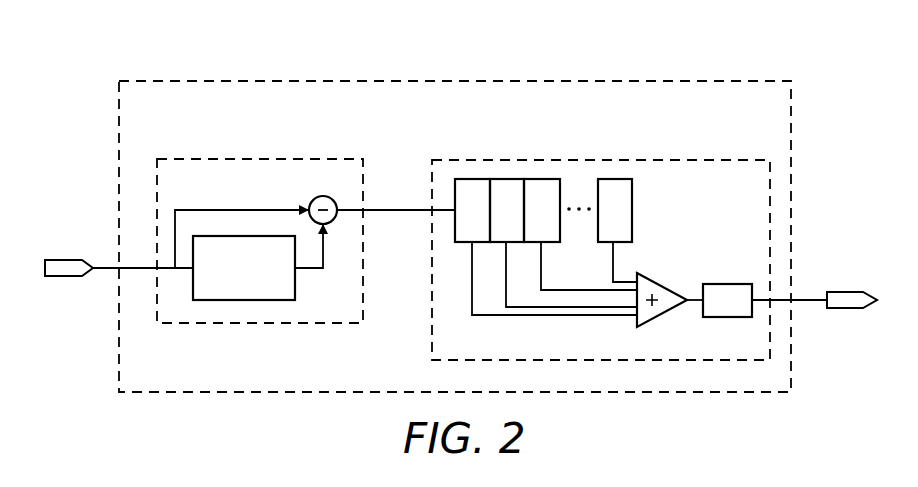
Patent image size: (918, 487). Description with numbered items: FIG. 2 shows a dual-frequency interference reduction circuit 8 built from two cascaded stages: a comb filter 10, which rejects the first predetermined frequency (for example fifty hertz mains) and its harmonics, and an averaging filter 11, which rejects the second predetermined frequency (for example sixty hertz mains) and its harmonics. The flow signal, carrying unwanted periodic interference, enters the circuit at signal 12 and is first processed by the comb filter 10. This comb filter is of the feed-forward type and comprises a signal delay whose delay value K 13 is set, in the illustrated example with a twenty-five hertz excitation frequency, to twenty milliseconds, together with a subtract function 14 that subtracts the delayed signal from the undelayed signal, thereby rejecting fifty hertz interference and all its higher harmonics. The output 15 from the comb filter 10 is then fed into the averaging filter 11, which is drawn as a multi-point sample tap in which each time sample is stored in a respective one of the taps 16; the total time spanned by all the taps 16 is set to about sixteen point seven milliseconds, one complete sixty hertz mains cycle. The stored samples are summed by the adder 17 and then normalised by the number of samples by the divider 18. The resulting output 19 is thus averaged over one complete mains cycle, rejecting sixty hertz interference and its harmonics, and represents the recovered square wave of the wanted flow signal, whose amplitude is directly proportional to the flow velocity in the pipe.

The dual-frequency interference reduction circuit 8 is at (149, 81).
The comb filter 10 is at (345, 323).
The averaging filter 11 is at (750, 160).
The signal 12 is at (140, 268).
The delay value K 13 is at (272, 300).
The subtract function 14 is at (322, 196).
The output from the comb filter 15 is at (395, 210).
The taps 16 is at (470, 179).
The adder 17 is at (668, 273).
The divider 18 is at (728, 284).
The output 19 is at (808, 300).